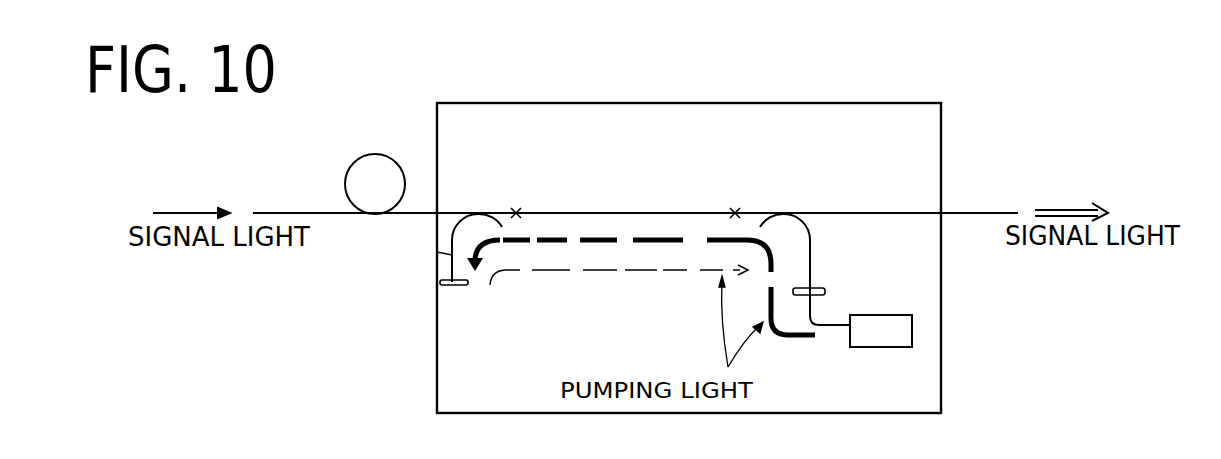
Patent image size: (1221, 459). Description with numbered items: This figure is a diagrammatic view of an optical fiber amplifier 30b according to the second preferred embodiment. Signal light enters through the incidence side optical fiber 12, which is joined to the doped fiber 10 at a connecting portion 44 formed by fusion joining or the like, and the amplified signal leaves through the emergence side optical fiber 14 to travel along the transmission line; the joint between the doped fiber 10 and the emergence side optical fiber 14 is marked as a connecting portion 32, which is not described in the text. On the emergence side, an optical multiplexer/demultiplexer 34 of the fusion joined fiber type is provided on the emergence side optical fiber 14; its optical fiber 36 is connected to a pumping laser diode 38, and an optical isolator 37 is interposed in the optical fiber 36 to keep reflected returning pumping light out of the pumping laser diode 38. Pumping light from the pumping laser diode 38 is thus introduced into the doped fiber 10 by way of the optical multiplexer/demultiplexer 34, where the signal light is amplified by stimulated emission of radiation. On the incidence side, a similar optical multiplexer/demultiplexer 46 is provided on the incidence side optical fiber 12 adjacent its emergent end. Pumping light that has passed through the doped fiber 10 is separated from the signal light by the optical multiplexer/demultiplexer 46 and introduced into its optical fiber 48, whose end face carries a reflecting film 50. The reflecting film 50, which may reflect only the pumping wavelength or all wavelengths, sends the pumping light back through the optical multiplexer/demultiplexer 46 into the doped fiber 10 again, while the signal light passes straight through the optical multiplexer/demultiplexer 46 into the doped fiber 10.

The optical fiber amplifier 30b is at (710, 104).
The doped fiber 10 is at (622, 213).
The incidence side optical fiber 12 is at (374, 153).
The emergence side optical fiber 14 is at (882, 211).
The splice 32 is at (735, 210).
The optical multiplexer/demultiplexer 34 is at (787, 212).
The optical fiber 36 is at (811, 238).
The optical isolator 37 is at (827, 292).
The pumping laser diode 38 is at (882, 348).
The connecting portion 44 is at (519, 211).
The optical multiplexer/demultiplexer 46 is at (480, 211).
The optical fiber 48 is at (437, 252).
The reflecting film 50 is at (461, 286).